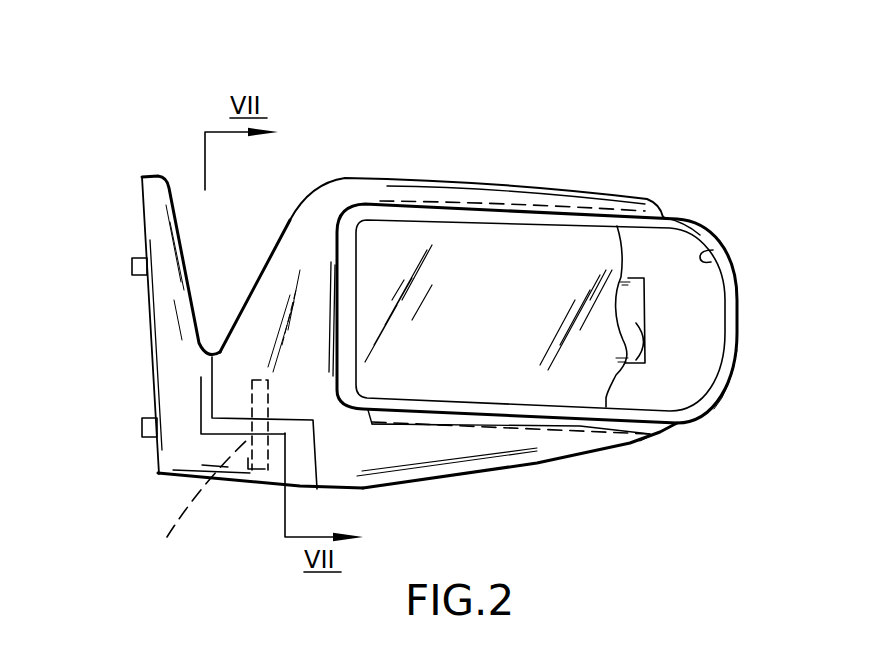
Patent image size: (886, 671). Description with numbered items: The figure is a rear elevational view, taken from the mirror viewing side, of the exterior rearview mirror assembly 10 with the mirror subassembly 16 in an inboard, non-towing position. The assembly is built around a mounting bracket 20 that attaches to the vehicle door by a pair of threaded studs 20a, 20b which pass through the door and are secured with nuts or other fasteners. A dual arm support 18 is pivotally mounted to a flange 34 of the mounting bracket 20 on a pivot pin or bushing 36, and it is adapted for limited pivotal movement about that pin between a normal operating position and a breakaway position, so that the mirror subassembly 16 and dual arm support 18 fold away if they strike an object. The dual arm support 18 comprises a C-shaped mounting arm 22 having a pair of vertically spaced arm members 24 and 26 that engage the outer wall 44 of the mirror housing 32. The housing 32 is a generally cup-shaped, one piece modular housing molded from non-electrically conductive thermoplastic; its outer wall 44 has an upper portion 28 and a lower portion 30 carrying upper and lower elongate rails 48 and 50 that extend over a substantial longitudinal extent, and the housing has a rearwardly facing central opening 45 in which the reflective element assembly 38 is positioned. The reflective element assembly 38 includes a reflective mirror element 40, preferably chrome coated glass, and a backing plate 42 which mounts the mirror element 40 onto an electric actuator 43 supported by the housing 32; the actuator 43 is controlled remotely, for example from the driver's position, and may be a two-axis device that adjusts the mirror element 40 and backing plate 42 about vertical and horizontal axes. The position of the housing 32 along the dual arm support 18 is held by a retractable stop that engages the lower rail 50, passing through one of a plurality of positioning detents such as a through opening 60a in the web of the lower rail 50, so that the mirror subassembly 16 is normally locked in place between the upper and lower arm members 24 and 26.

The exterior rearview mirror assembly 10 is at (632, 76).
The mirror subassembly 16 is at (726, 200).
The dual arm support 18 is at (375, 160).
The mounting bracket 20 is at (120, 345).
The threaded stud 20a is at (132, 262).
The threaded stud 20b is at (142, 425).
The C-shaped mounting arm 22 is at (500, 182).
The upper arm member 24 is at (570, 200).
The lower arm member 26 is at (570, 443).
The upper portion 28 is at (673, 216).
The lower portion 30 is at (680, 430).
The mirror housing 32 is at (723, 404).
The flange 34 is at (272, 470).
The pivot pin 36 is at (189, 506).
The reflective element assembly 38 is at (705, 302).
The reflective mirror element 40 is at (621, 277).
The backing plate 42 is at (618, 372).
The electric actuator 43 is at (647, 343).
The outer wall 44 is at (730, 361).
The central opening 45 is at (733, 251).
The upper elongate rail 48 is at (432, 213).
The lower elongate rail 50 is at (525, 432).
The through opening 60a is at (407, 422).